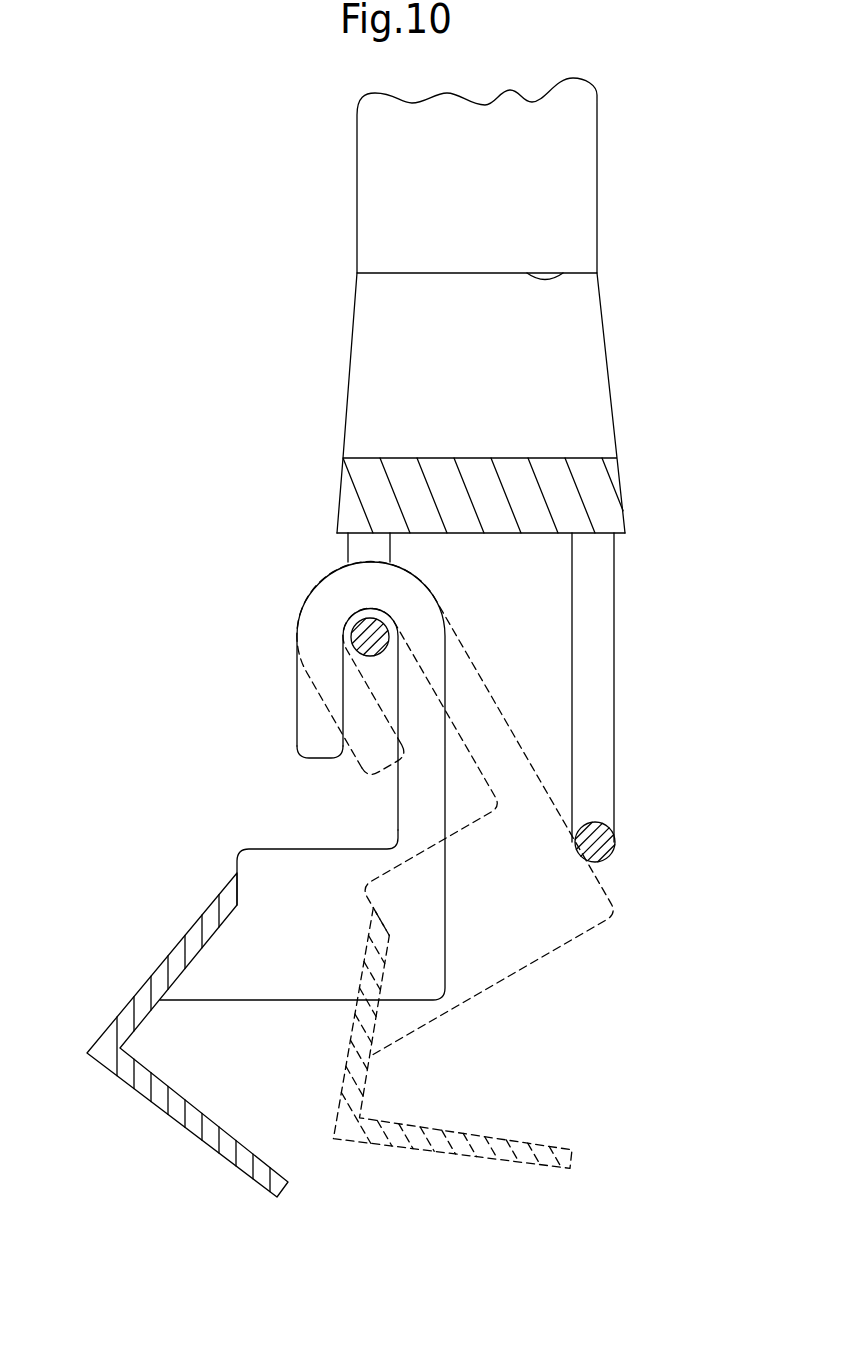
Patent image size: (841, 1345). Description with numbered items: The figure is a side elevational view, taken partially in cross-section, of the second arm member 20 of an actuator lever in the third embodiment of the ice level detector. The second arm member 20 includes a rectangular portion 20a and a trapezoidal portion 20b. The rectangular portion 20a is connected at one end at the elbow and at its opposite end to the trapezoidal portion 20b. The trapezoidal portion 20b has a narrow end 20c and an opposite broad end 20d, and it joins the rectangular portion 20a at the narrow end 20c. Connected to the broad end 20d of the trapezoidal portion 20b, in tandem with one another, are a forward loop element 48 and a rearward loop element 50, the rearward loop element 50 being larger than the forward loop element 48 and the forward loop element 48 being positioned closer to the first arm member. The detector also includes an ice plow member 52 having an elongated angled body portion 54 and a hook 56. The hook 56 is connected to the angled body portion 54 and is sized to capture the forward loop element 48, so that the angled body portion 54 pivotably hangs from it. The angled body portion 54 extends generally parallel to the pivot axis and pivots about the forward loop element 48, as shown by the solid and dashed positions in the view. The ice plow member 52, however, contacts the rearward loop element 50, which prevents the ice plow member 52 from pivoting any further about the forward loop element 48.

The second arm member 20 is at (570, 123).
The rectangular portion 20a is at (495, 197).
The trapezoidal portion 20b is at (495, 348).
The narrow end 20c is at (566, 272).
The broad end 20d is at (613, 533).
The forward loop element 48 is at (362, 553).
The rearward loop element 50 is at (602, 692).
The ice plow member 52 is at (175, 943).
The angled body portion 54 is at (338, 1067).
The hook 56 is at (280, 860).